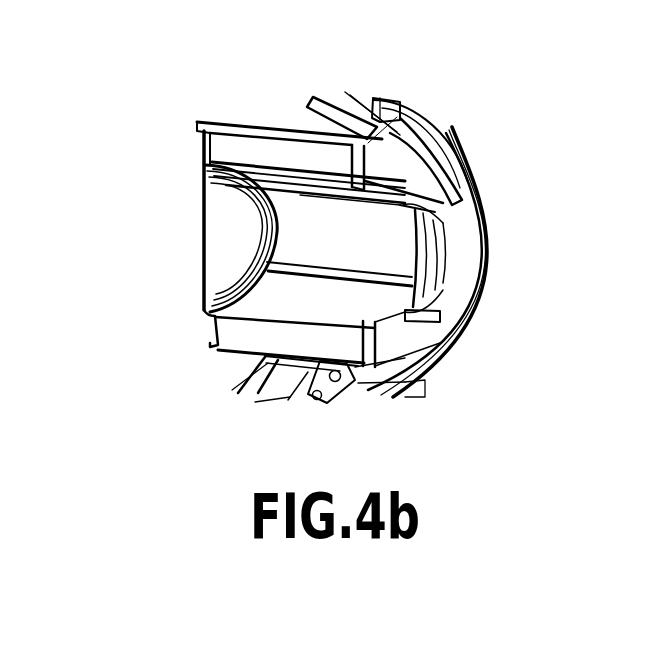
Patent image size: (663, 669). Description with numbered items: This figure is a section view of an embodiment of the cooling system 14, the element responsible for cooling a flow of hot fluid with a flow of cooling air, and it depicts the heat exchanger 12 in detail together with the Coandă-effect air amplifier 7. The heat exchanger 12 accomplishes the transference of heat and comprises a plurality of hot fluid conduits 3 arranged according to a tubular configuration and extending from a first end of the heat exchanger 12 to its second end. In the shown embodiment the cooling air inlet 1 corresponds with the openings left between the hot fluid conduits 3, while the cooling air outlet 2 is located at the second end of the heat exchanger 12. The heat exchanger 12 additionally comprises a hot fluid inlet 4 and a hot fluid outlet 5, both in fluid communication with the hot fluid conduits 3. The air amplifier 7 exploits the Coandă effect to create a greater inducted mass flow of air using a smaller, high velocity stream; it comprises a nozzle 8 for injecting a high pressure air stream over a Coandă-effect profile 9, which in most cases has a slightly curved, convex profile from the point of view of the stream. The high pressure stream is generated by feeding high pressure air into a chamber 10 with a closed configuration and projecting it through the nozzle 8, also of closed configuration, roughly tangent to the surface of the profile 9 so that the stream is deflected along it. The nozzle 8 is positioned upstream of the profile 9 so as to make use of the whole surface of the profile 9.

The cooling air inlet 1 is at (267, 124).
The cooling air outlet 2 is at (442, 251).
The hot fluid conduits 3 is at (256, 338).
The hot fluid inlet 4 is at (202, 147).
The hot fluid outlet 5 is at (408, 107).
The Coandă-effect air amplifier 7 is at (480, 152).
The nozzle 8 is at (478, 299).
The Coandă-effect profile 9 is at (384, 237).
The chamber 10 is at (438, 368).
The heat exchanger 12 is at (240, 116).
The cooling system 14 is at (125, 81).